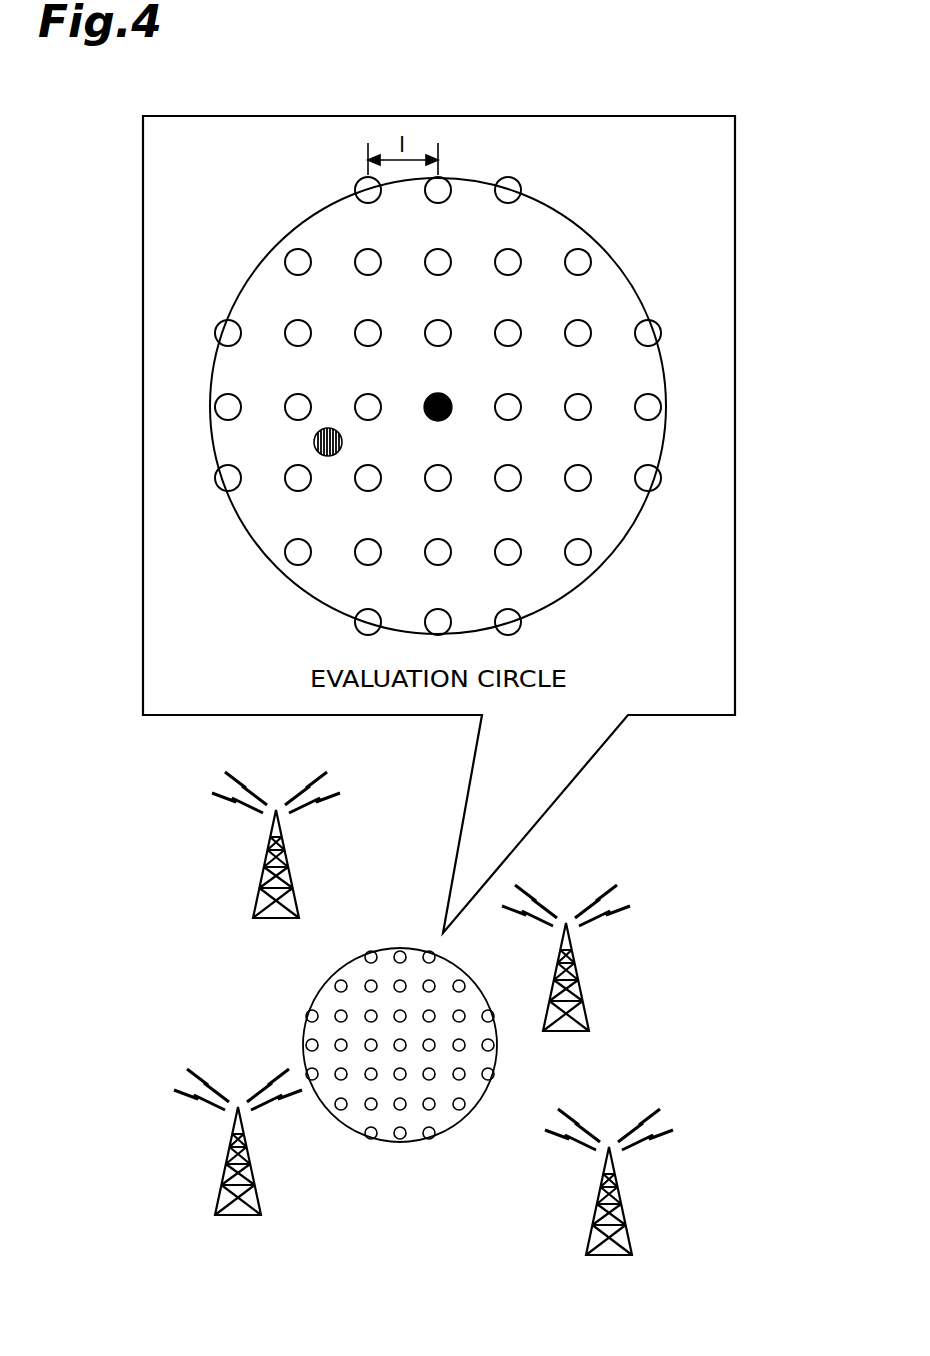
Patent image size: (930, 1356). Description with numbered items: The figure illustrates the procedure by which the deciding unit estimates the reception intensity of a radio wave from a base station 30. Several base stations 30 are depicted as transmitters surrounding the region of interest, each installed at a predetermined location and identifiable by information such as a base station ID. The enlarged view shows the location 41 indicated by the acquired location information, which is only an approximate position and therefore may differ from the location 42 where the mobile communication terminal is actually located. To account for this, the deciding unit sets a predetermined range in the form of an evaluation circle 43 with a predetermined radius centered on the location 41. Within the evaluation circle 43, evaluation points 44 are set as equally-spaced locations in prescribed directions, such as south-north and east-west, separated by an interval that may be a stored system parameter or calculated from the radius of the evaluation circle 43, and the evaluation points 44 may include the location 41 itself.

The base station 30 is at (253, 900).
The location indicated by the location information 41 is at (441, 394).
The location where the mobile communication terminal is actually located 42 is at (313, 440).
The evaluation circle 43 is at (637, 523).
The evaluation points 44 is at (515, 321).